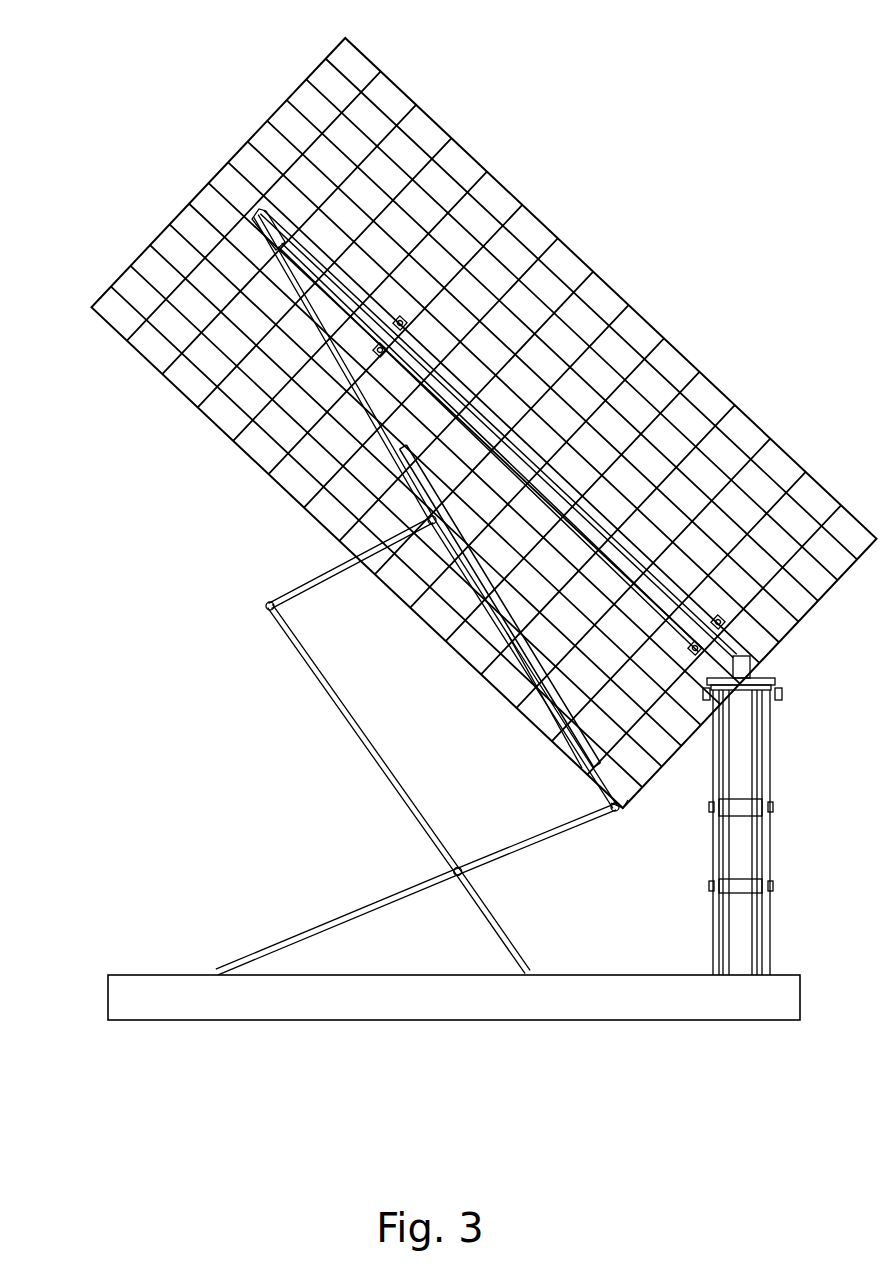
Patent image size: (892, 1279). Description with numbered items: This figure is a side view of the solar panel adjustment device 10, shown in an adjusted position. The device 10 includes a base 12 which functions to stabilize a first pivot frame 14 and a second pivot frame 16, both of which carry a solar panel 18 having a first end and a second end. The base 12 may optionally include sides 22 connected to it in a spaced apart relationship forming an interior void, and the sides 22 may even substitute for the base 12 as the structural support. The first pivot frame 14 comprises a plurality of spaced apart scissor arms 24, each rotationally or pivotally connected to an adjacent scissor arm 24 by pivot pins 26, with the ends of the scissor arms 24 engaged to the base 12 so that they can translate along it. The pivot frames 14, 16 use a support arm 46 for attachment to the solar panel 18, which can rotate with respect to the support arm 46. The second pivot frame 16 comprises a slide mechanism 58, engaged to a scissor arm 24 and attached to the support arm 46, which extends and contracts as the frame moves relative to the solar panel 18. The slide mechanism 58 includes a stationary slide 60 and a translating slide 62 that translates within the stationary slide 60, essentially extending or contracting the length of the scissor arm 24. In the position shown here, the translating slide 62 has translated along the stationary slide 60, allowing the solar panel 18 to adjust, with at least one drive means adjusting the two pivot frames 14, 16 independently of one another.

The solar panel adjustment device 10 is at (632, 125).
The base 12 is at (86, 985).
The first pivot frame 14 is at (822, 824).
The second pivot frame 16 is at (316, 730).
The solar panel 18 is at (624, 355).
The sides 22 is at (258, 1012).
The scissor arms 24 is at (381, 771).
The pivot pins 26 is at (265, 610).
The support arm 46 is at (314, 262).
The slide mechanism 58 is at (282, 298).
The stationary slide 60 is at (607, 783).
The translating slide 62 is at (297, 272).